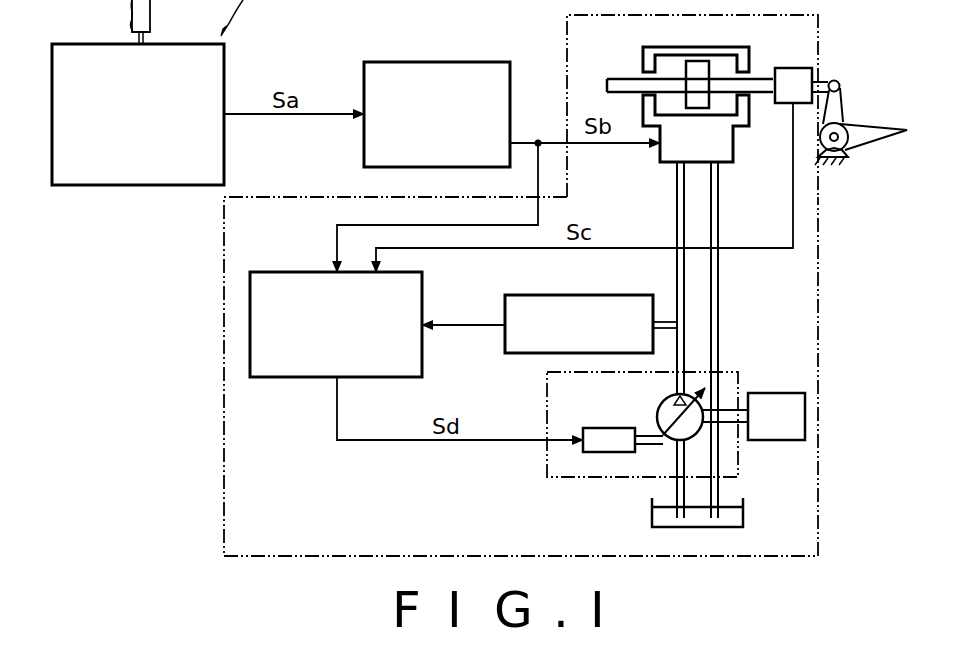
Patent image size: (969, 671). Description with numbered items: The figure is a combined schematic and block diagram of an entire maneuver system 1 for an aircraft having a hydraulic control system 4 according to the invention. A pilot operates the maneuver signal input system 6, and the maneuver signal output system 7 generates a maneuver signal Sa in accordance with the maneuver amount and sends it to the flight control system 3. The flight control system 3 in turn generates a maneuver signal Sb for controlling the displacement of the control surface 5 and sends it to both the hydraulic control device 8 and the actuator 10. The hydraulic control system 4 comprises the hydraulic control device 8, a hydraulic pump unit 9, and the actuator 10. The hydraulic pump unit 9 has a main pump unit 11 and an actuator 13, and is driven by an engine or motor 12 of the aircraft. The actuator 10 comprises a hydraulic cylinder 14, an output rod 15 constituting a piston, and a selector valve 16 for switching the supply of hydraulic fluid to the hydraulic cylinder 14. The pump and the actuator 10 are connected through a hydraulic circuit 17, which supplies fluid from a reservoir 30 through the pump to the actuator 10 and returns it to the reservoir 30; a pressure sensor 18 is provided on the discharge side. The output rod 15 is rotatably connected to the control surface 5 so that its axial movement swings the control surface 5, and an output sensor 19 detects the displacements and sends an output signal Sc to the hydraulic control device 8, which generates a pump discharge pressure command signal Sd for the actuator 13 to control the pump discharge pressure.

The maneuver system 1 is at (340, 20).
The flight control system 3 is at (446, 62).
The hydraulic control system 4 is at (826, 43).
The control surface 5 is at (876, 110).
The maneuver signal input system 6 is at (150, 8).
The maneuver signal output system 7 is at (224, 74).
The hydraulic control device 8 is at (297, 272).
The hydraulic pump unit 9 is at (735, 372).
The actuator 10 is at (630, 62).
The main pump unit 11 is at (668, 403).
The motor 12 is at (778, 393).
The actuator 13 is at (607, 428).
The hydraulic cylinder 14 is at (700, 47).
The output rod 15 is at (757, 79).
The selector valve 16 is at (733, 145).
The hydraulic circuit 17 is at (711, 218).
The pressure sensor 18 is at (577, 295).
The output sensor 19 is at (793, 68).
The reservoir 30 is at (743, 510).